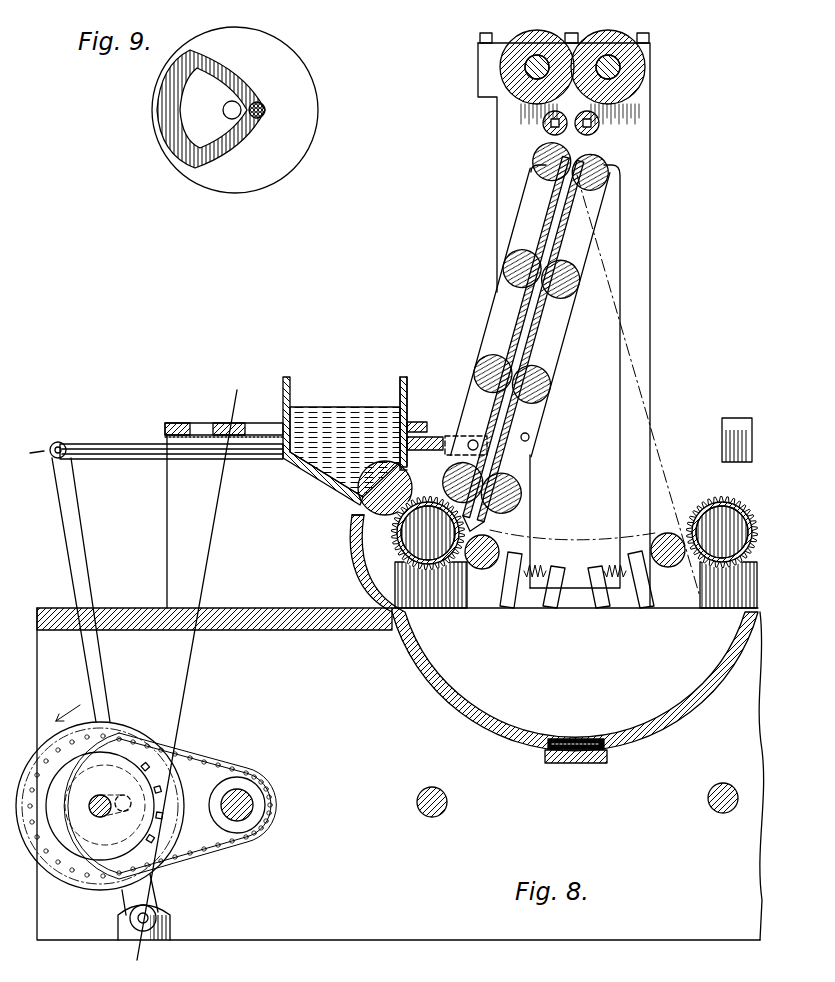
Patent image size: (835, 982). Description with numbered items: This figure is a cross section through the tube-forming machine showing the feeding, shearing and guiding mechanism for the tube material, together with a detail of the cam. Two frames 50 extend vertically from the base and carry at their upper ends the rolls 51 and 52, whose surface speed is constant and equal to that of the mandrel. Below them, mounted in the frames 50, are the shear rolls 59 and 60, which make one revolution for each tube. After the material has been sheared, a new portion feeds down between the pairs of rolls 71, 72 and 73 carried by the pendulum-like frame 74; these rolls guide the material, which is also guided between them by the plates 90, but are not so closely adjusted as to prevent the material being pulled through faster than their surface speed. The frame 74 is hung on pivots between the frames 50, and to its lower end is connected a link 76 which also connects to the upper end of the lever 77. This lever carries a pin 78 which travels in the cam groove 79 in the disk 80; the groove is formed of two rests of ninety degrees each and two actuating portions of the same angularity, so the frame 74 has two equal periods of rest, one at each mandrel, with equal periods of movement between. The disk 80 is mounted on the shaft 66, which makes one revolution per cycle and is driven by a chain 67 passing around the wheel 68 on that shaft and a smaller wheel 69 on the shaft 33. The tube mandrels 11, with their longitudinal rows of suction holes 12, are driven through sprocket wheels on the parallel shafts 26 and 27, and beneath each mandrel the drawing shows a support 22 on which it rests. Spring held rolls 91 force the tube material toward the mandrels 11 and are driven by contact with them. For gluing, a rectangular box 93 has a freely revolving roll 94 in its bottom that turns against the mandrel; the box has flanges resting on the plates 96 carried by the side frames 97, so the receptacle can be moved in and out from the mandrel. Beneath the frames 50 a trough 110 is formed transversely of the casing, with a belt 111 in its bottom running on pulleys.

In FIG. 8, the tube mandrel 11 is at (727, 582).
In FIG. 8, the suction holes 12 is at (760, 520).
In FIG. 8, the roller support pedestal 22 is at (708, 590).
In FIG. 8, the parallel shaft 26 is at (447, 808).
In FIG. 8, the parallel shaft 27 is at (712, 810).
In FIG. 8, the shaft 33 is at (240, 805).
In FIG. 8, the frame 50 is at (640, 244).
In FIG. 8, the roll 51 is at (607, 36).
In FIG. 8, the roll 52 is at (536, 34).
In FIG. 8, the shear roll 59 is at (548, 128).
In FIG. 8, the shear roll 60 is at (600, 128).
In FIG. 8, the shaft 66 is at (99, 818).
In FIG. 8, the chain 67 is at (197, 760).
In FIG. 8, the wheel 68 is at (126, 790).
In FIG. 8, the smaller wheel 69 is at (254, 778).
In FIG. 8, the rolls 71 is at (576, 200).
In FIG. 8, the rolls 72 is at (540, 292).
In FIG. 8, the rolls 73 is at (522, 358).
In FIG. 8, the pendulum-like frame 74 is at (508, 477).
In FIG. 8, the link 76 is at (253, 459).
In FIG. 8, the lever 77 is at (82, 568).
In FIG. 8, the pin 78 is at (187, 675).
In FIG. 9, the cam groove 79 is at (233, 152).
In FIG. 9, the disk 80 is at (275, 125).
In FIG. 8, the disk 80 is at (172, 838).
In FIG. 8, the plates 90 is at (507, 433).
In FIG. 8, the spring held rolls 91 is at (670, 570).
In FIG. 8, the rectangular box 93 is at (283, 396).
In FIG. 8, the roll 94 is at (360, 497).
In FIG. 8, the plate 96 is at (218, 422).
In FIG. 8, the side frame 97 is at (212, 521).
In FIG. 8, the trough 110 is at (505, 727).
In FIG. 8, the belt 111 is at (607, 748).